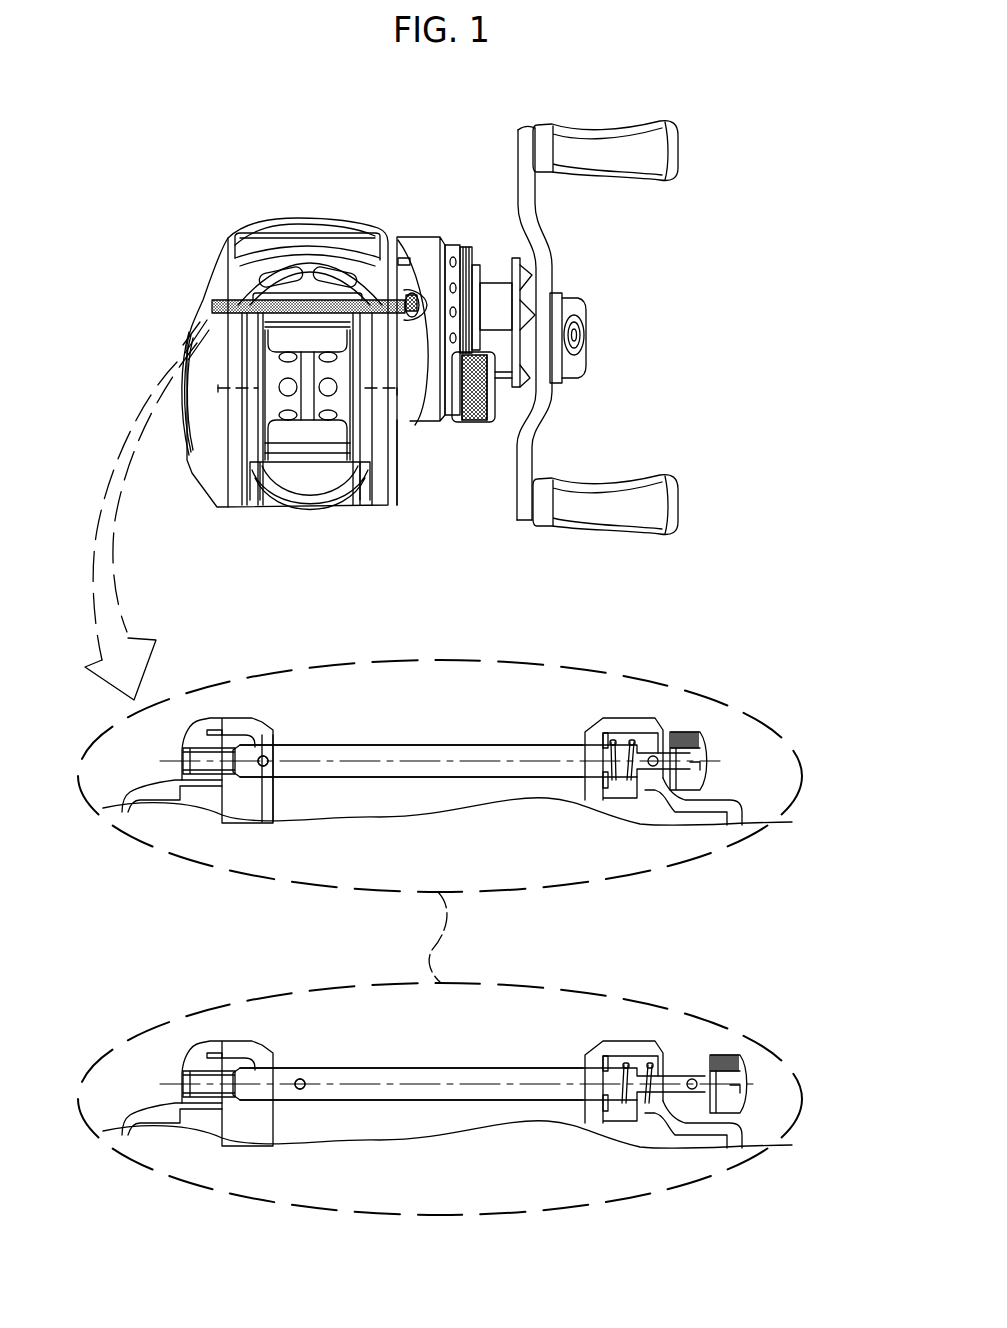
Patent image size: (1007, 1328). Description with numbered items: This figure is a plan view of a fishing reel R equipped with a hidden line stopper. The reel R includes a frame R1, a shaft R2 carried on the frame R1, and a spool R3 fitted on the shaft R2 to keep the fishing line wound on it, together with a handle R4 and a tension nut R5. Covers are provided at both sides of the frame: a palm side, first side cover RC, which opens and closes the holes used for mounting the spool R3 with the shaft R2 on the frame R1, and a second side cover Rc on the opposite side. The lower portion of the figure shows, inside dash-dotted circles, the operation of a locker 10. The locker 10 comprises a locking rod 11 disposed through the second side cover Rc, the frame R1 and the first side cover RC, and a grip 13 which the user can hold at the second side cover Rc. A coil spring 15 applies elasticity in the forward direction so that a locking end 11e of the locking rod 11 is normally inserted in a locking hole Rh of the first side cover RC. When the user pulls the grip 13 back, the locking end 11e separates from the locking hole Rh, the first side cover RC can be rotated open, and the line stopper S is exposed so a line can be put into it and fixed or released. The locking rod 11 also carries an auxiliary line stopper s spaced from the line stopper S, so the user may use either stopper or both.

The fishing reel R is at (103, 108).
The first side cover RC is at (205, 256).
The frame R1 is at (260, 214).
The second side cover Rc is at (419, 247).
The tension nut R5 is at (510, 228).
The handle R4 is at (614, 182).
The shaft R2 is at (453, 452).
The spool R3 is at (305, 432).
The locker 10 is at (424, 303).
The locking rod 11 is at (383, 745).
The locking end 11e is at (253, 750).
The locking hole Rh is at (205, 1078).
The grip 13 is at (712, 740).
The coil spring 15 is at (632, 785).
The auxiliary line stopper s is at (263, 768).
The line stopper S is at (653, 768).